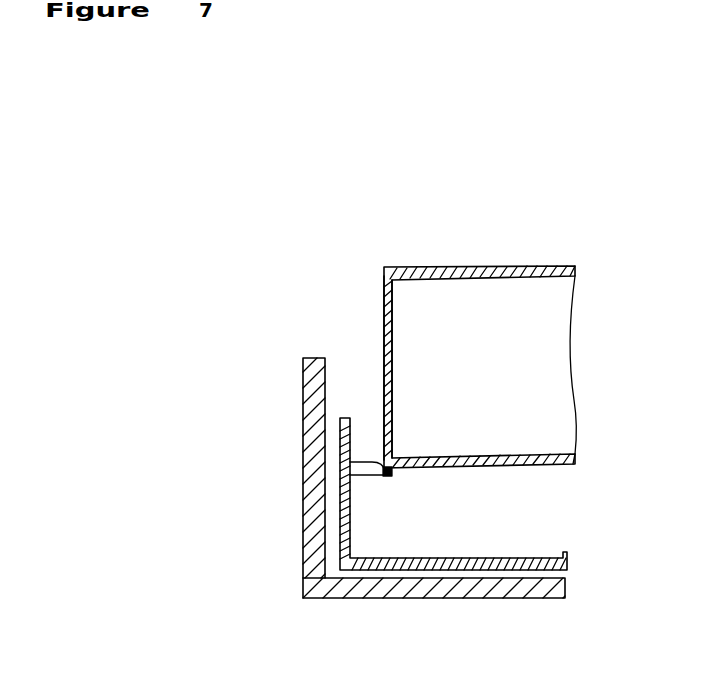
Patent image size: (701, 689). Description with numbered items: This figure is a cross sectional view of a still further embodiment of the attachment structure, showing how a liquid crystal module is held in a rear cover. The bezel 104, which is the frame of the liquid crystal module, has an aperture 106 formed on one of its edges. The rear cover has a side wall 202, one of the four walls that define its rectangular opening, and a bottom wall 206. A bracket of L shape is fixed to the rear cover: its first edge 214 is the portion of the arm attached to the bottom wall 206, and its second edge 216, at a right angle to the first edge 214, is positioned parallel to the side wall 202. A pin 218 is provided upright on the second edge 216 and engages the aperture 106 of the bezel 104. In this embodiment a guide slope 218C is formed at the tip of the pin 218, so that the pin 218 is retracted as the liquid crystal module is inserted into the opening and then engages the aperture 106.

The bezel 104 is at (480, 331).
The aperture 106 is at (393, 377).
The side wall 202 is at (312, 405).
The bottom wall 206 is at (453, 598).
The first edge 214 is at (522, 557).
The second edge 216 is at (406, 494).
The pin 218 is at (368, 462).
The guide slope 218C is at (393, 474).